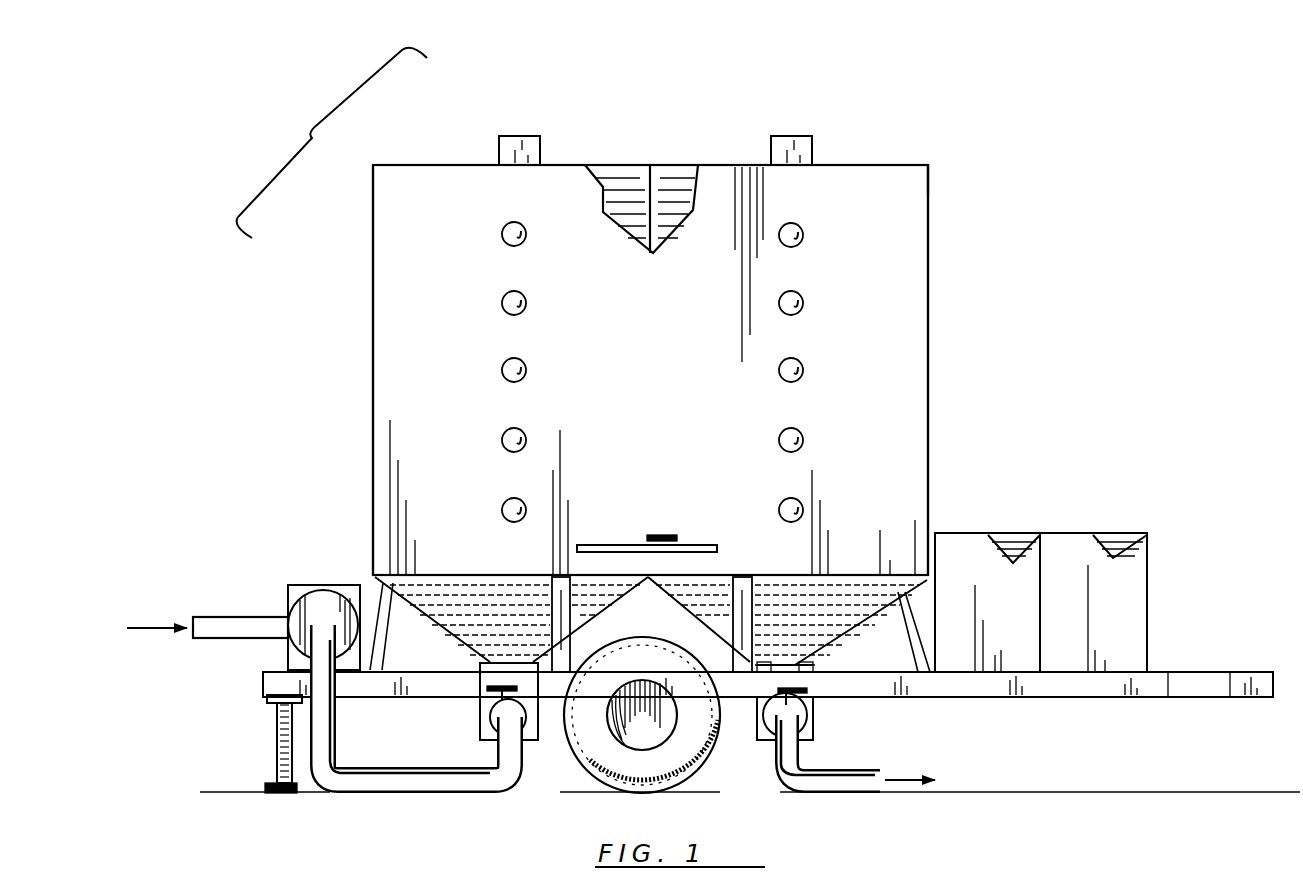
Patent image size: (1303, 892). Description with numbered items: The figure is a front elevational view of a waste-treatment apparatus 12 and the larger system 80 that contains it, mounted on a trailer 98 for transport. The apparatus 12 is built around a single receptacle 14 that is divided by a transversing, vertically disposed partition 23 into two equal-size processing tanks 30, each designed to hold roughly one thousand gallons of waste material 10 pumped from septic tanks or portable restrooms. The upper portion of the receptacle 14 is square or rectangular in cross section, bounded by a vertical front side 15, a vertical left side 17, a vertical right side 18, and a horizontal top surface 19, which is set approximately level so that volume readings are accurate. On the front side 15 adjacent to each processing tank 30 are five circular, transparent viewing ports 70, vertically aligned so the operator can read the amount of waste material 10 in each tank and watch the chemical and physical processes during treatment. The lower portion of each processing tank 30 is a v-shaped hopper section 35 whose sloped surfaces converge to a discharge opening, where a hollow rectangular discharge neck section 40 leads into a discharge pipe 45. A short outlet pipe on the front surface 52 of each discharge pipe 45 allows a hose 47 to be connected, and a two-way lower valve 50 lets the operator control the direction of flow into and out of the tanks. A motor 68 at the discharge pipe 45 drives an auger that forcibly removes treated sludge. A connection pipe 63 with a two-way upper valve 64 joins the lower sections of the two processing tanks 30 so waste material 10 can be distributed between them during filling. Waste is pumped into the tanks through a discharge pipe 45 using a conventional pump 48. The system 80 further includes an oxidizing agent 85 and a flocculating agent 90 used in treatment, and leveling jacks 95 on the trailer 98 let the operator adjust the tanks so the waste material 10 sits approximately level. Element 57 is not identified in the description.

The waste material 10 is at (670, 213).
The apparatus 12 is at (915, 135).
The receptacle 14 is at (458, 162).
The vertical front side 15 is at (666, 460).
The vertical left side 17 is at (373, 367).
The vertical right side 18 is at (928, 343).
The horizontal top surface 19 is at (922, 165).
The partition 23 is at (643, 214).
The processing tanks 30 is at (678, 183).
The hopper section 35 is at (458, 640).
The discharge neck section 40 is at (482, 675).
The discharge pipe 45 is at (482, 713).
The hose 47 is at (477, 780).
The pump 48 is at (300, 580).
The lower valve 50 is at (812, 697).
The front surface 52 is at (480, 740).
The vent 57 is at (522, 133).
The connection pipe 63 is at (700, 545).
The upper valve 64 is at (650, 536).
The motor 68 is at (813, 725).
The viewing ports 70 is at (502, 302).
The system 80 is at (332, 143).
The oxidizing agent 85 is at (1027, 535).
The flocculating agent 90 is at (1133, 535).
The leveling jacks 95 is at (277, 752).
The trailer 98 is at (1248, 672).